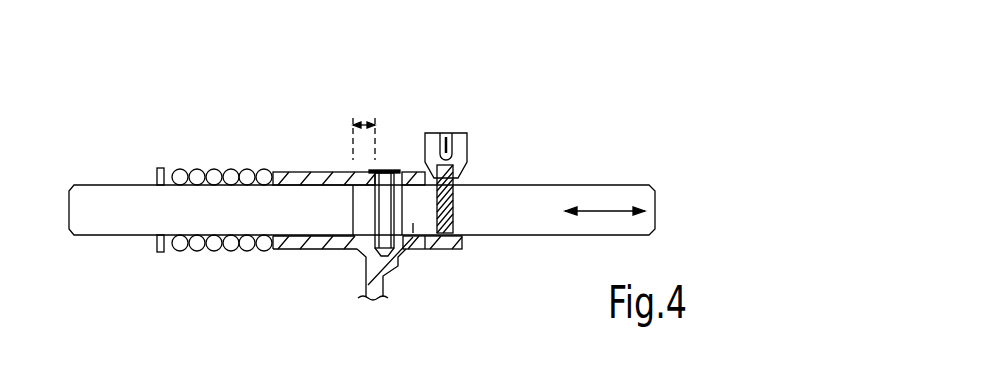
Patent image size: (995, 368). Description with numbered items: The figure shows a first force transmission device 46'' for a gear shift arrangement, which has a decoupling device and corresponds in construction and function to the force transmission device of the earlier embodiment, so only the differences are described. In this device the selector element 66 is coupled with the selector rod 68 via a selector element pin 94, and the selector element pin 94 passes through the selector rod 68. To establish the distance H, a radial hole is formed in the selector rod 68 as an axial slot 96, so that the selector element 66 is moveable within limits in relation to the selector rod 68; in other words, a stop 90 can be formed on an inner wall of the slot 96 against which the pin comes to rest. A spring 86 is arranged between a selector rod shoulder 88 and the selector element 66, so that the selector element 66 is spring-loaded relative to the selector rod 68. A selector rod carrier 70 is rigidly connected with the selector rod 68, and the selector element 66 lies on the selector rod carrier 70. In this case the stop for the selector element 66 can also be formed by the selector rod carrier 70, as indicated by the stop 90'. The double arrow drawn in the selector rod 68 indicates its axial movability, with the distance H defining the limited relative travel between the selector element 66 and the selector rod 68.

The first force transmission device 46'' is at (616, 65).
The selector element 66 is at (417, 255).
The selector rod 68 is at (643, 202).
The selector rod carrier 70 is at (468, 147).
The spring 86 is at (197, 169).
The selector rod shoulder 88 is at (160, 168).
The stop 90 is at (336, 247).
The stop 90' is at (415, 237).
The selector element pin 94 is at (360, 205).
The axial slot 96 is at (383, 170).
The distance H is at (365, 122).